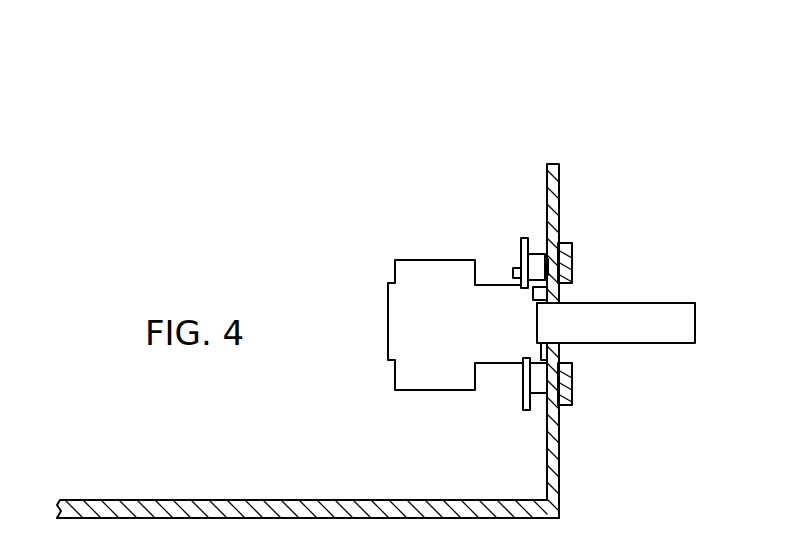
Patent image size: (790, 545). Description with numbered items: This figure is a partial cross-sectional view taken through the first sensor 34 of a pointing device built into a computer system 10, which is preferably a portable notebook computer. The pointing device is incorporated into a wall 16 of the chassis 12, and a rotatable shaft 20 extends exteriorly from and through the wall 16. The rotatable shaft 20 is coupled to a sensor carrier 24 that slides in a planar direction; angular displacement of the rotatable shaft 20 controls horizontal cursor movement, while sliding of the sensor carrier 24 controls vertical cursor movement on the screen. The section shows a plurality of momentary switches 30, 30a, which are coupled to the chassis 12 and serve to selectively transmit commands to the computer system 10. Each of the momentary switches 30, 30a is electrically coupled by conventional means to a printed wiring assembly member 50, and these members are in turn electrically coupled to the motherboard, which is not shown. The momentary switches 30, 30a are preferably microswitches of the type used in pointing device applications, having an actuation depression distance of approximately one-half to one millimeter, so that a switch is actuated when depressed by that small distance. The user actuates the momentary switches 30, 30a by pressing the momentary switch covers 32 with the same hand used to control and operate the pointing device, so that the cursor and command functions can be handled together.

The computer system 10 is at (612, 94).
The chassis 12 is at (561, 478).
The wall 16 is at (562, 192).
The rotatable shaft 20 is at (677, 303).
The sensor carrier 24 is at (560, 290).
The momentary switch 30 is at (556, 232).
The momentary switch 30a is at (551, 402).
The momentary switch cover 32 is at (572, 262).
The first sensor 34 is at (437, 260).
The printed wiring assembly member 50 is at (520, 248).